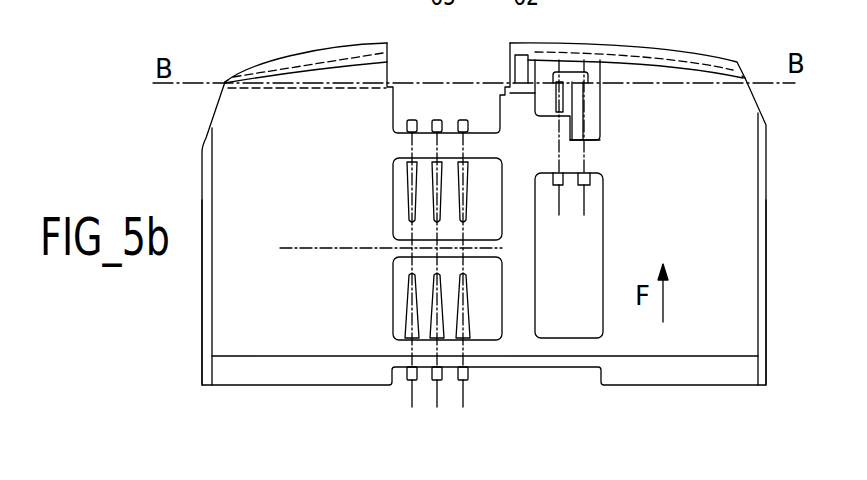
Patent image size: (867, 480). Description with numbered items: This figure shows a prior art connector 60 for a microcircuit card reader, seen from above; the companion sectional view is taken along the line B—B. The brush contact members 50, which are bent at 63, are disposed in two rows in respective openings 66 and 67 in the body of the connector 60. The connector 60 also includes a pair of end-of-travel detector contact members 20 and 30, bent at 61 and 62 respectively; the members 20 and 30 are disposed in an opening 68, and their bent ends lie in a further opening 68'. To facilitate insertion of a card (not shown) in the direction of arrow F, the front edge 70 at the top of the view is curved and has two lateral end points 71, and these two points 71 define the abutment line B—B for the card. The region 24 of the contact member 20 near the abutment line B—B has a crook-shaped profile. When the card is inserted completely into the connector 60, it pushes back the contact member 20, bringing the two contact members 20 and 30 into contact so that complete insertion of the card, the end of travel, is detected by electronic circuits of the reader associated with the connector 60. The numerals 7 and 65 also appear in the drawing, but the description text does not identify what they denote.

The card 7 is at (555, 112).
The detector contact member 20 is at (593, 112).
The region of the contact member 24 is at (585, 90).
The detector contact member 30 is at (548, 92).
The brush contact member 50 is at (393, 176).
The connector 60 is at (197, 178).
The bend of contact member 20 61 is at (600, 178).
The bend of contact member 30 62 is at (553, 190).
The bend of brush contact members 63 is at (440, 118).
The side wall 65 is at (207, 318).
The opening 66 is at (402, 230).
The opening 67 is at (400, 270).
The opening 68 is at (615, 155).
The opening 68' is at (606, 255).
The front edge 70 is at (313, 60).
The lateral end point 71 is at (225, 82).